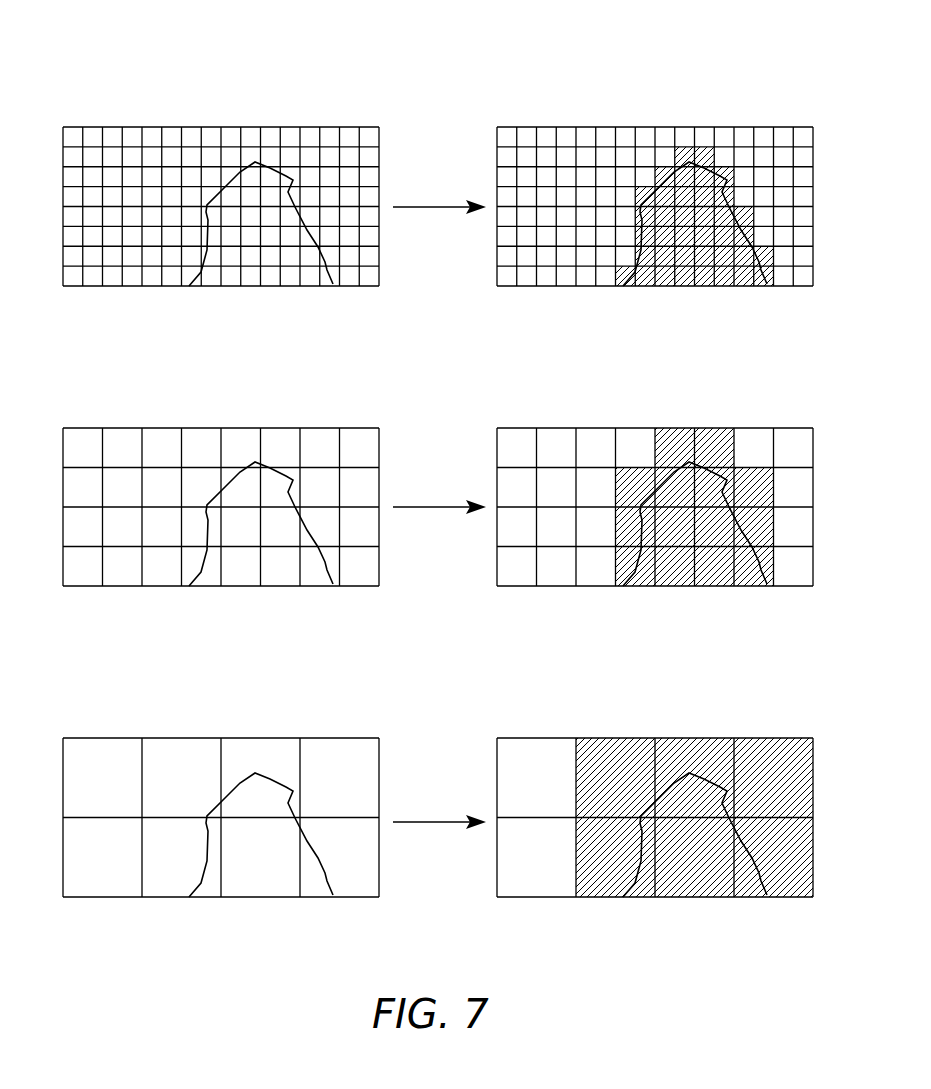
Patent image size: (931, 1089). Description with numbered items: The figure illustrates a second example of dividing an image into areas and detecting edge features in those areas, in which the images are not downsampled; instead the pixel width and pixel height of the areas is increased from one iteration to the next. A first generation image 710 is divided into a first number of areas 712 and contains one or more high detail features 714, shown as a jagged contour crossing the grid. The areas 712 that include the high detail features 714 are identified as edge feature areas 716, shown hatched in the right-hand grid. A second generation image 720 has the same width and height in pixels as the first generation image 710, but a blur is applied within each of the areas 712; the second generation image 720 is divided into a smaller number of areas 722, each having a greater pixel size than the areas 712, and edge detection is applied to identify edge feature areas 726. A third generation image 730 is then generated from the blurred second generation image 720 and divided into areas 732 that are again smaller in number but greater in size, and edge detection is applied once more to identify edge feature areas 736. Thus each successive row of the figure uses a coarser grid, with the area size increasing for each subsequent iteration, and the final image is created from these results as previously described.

The first generation image 710 is at (75, 82).
The areas 712 is at (135, 133).
The high detail features 714 is at (278, 153).
The edge feature areas 716 is at (687, 148).
The second generation image 720 is at (424, 458).
The areas 722 is at (113, 432).
The edge feature areas 726 is at (718, 430).
The third generation image 730 is at (423, 770).
The areas 732 is at (112, 743).
The edge feature areas 736 is at (700, 743).